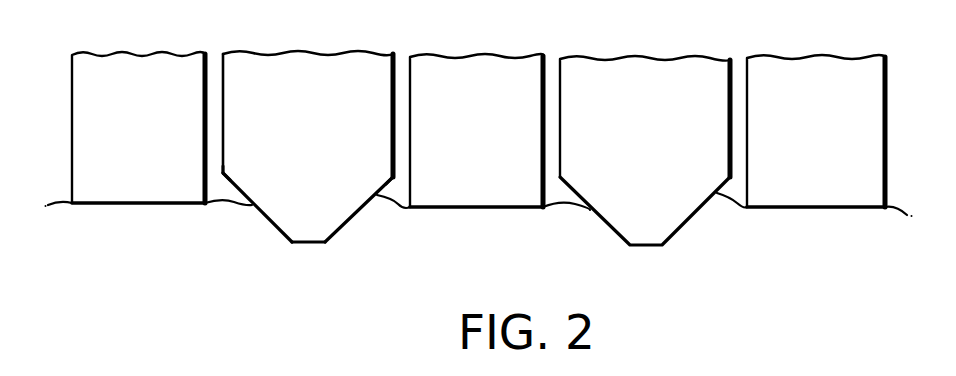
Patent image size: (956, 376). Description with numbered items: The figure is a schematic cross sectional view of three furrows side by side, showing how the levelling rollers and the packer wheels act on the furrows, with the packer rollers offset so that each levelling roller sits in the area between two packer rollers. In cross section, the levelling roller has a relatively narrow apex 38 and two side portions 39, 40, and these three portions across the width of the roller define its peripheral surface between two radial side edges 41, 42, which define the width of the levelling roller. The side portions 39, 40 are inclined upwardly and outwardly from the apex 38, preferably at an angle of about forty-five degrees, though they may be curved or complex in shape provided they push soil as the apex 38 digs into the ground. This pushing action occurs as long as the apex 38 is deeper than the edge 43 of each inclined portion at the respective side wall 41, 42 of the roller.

The apex 38 is at (307, 242).
The side portion 39 is at (265, 220).
The side portion 40 is at (358, 213).
The radial side edge 41 is at (224, 112).
The radial side edge 42 is at (393, 122).
The edge 43 is at (225, 172).